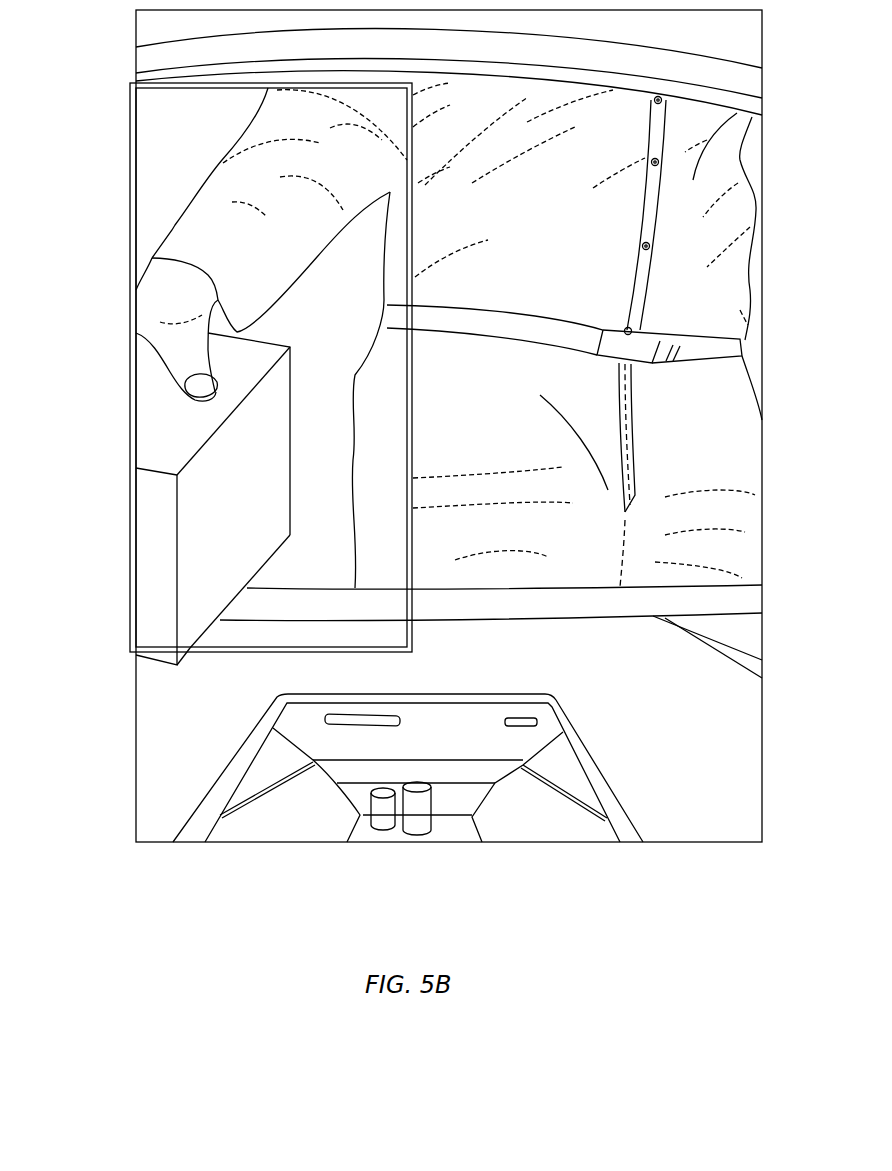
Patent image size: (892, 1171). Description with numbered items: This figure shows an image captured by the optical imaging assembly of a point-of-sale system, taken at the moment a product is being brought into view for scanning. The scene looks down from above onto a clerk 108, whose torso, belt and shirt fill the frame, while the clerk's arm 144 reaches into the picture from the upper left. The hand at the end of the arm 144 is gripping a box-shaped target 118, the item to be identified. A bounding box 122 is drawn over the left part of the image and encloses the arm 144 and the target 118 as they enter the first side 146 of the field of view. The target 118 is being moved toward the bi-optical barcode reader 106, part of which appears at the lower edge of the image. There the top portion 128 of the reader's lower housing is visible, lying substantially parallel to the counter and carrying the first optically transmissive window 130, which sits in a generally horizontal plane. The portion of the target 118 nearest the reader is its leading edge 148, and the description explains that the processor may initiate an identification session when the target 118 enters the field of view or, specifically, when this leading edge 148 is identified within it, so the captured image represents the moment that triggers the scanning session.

The bi-optical barcode reader 106 is at (733, 693).
The clerk 108 is at (190, 238).
The target 118 is at (167, 515).
The bounding box 122 is at (160, 86).
The top portion 128 is at (160, 695).
The first optically transmissive window 130 is at (233, 822).
The arm 144 is at (163, 342).
The first side 146 is at (145, 556).
The leading edge 148 is at (160, 601).